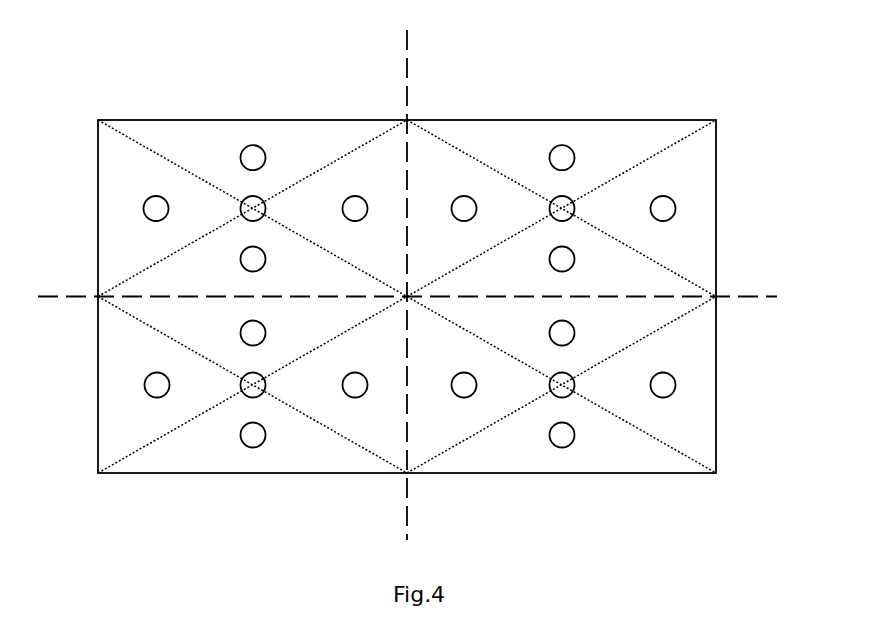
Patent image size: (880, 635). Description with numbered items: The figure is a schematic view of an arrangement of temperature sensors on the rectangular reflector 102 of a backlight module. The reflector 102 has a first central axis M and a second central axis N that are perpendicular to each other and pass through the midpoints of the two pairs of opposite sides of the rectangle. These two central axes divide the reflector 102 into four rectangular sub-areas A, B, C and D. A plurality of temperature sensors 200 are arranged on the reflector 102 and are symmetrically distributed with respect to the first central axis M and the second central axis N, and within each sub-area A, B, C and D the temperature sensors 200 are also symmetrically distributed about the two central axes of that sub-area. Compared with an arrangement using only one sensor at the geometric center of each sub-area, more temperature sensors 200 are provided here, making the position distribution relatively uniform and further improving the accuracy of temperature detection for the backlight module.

The reflector 102 is at (183, 120).
The temperature sensors 200 is at (565, 196).
The sub-area A is at (252, 208).
The sub-area B is at (561, 208).
The sub-area C is at (252, 385).
The sub-area D is at (561, 385).
The first central axis MM' M is at (429, 285).
The second central axis NN' N is at (414, 280).